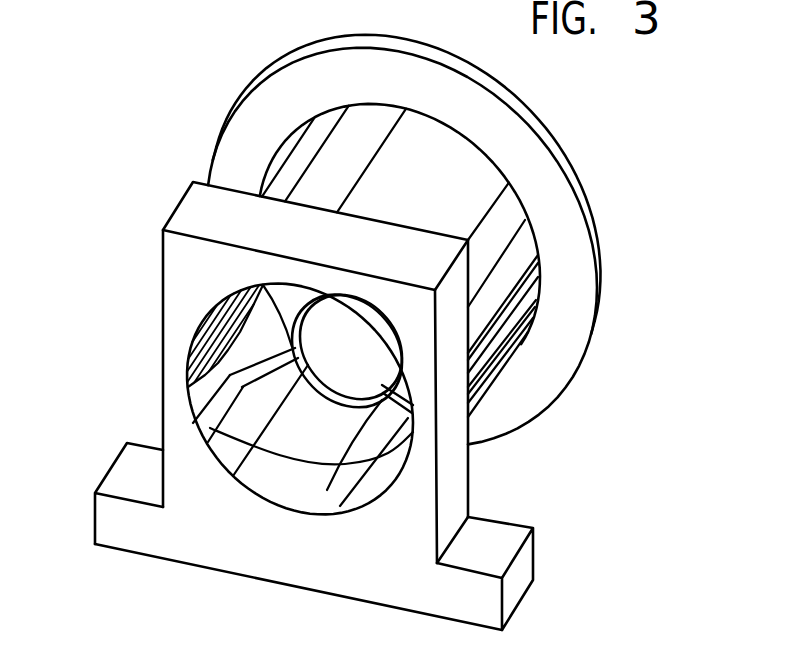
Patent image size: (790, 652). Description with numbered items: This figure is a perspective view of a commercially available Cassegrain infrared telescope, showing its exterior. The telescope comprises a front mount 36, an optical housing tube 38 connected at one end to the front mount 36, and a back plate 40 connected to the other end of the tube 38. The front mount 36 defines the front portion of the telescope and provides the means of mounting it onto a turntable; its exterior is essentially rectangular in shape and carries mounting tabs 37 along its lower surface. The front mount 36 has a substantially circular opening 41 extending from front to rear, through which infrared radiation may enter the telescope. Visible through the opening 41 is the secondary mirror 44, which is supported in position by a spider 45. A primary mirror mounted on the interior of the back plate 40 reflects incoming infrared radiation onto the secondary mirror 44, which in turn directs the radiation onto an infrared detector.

The front mount 36 is at (185, 262).
The mounting tabs 37 is at (120, 478).
The optical housing tube 38 is at (298, 164).
The back plate 40 is at (555, 149).
The circular opening 41 is at (230, 327).
The secondary mirror 44 is at (359, 370).
The spider 45 is at (303, 445).